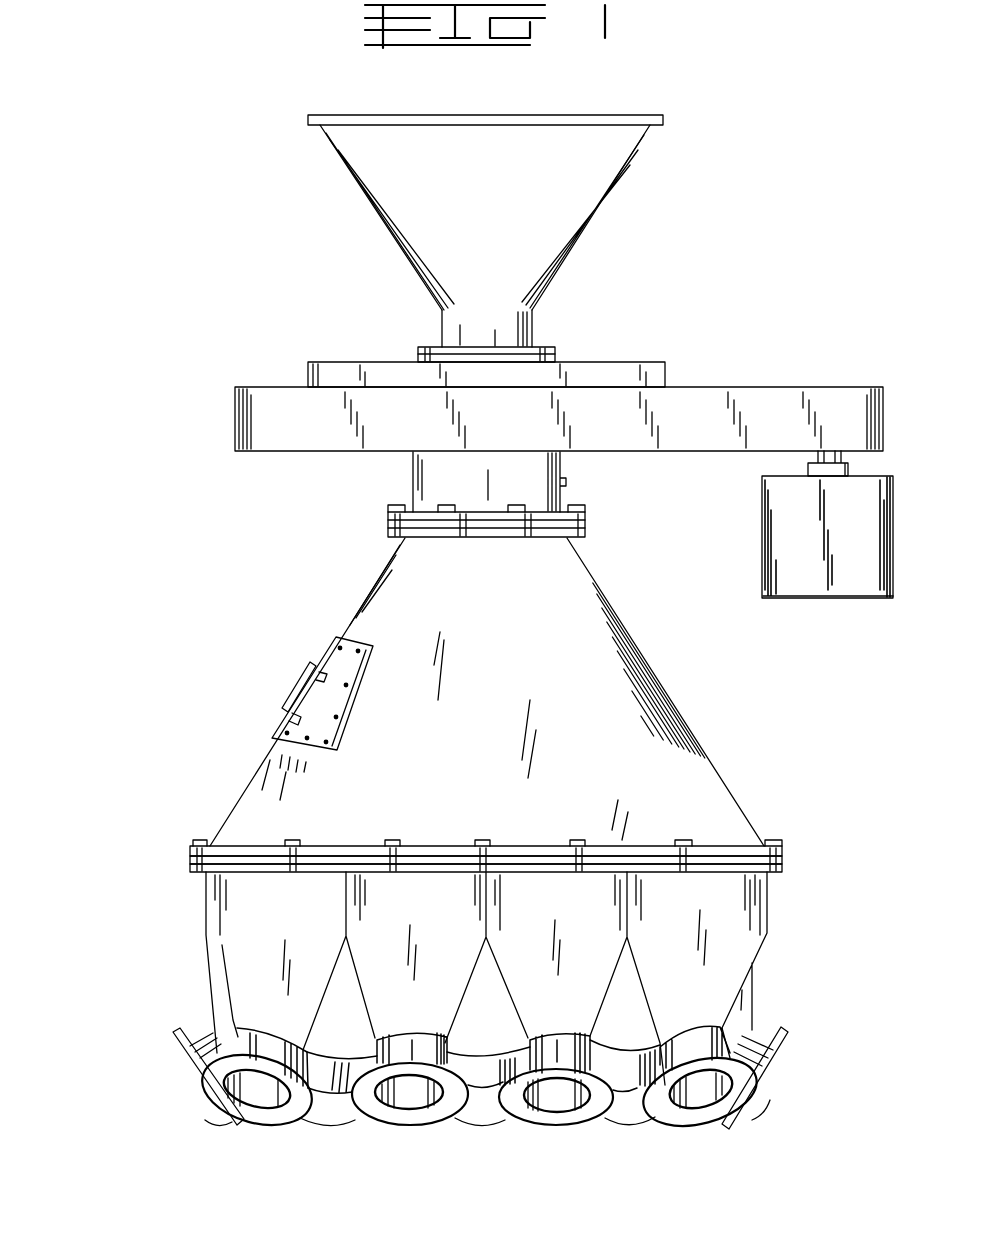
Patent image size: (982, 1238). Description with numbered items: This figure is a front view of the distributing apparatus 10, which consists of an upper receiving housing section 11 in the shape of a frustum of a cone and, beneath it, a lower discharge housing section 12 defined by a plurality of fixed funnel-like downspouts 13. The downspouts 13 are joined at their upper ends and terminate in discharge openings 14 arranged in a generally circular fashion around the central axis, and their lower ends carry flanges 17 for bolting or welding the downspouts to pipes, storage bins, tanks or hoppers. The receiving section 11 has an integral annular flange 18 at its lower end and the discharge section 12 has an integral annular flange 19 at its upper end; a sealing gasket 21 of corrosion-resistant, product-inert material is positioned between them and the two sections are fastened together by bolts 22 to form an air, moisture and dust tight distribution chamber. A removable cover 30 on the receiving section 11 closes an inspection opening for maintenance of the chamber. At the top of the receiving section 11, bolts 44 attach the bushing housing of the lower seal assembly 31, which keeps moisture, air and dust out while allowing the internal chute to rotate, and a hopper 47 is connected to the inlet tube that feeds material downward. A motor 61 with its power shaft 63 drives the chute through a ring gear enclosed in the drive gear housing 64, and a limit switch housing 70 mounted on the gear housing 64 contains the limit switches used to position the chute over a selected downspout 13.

The distributing apparatus 10 is at (436, 692).
The upper receiving housing section 11 is at (355, 613).
The lower discharge housing section 12 is at (468, 975).
The downspouts 13 is at (218, 1000).
The discharge openings 14 is at (562, 1100).
The flanges 17 is at (790, 1040).
The annular flange 18 is at (782, 850).
The annular flange 19 is at (782, 872).
The sealing gasket 21 is at (782, 861).
The bolts 22 is at (198, 840).
The removable cover 30 is at (288, 725).
The lower seal assembly 31 is at (607, 481).
The bolts 44 is at (396, 504).
The hopper 47 is at (560, 218).
The motor 61 is at (810, 578).
The power shaft 63 is at (815, 458).
The drive gear housing 64 is at (757, 410).
The limit switch housing 70 is at (577, 378).